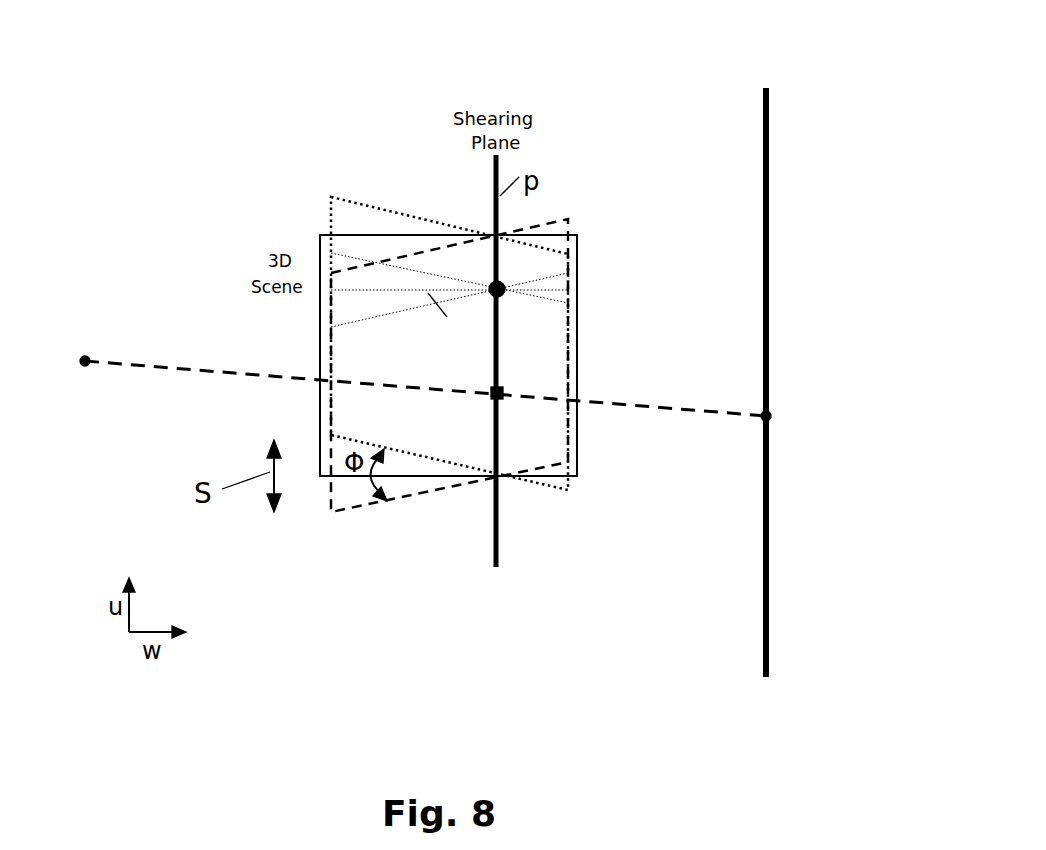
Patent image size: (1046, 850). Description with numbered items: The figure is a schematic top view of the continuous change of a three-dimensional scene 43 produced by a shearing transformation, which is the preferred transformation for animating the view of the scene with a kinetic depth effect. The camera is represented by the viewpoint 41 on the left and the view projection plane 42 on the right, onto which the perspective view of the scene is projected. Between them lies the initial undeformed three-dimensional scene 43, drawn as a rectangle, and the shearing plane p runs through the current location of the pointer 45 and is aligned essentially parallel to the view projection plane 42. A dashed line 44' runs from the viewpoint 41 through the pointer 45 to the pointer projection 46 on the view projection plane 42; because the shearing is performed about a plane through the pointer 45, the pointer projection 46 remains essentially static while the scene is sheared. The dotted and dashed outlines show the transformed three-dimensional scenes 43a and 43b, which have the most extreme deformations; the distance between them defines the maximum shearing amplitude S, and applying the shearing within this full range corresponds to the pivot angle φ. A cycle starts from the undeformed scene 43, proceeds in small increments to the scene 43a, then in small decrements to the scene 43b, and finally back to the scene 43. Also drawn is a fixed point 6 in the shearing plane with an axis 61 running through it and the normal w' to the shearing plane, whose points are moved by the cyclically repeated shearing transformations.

The viewpoint 41 is at (82, 355).
The view projection plane 42 is at (764, 125).
The three-dimensional scene 43 is at (318, 352).
The transformed three-dimensional scene 43a is at (395, 210).
The transformed three-dimensional scene 43b is at (353, 508).
The projection ray from viewpoint through pointer 44' is at (425, 374).
The pointer 45 is at (502, 400).
The pointer projection 46 is at (770, 410).
The fixed point 6 is at (503, 296).
The axis 61 is at (385, 315).